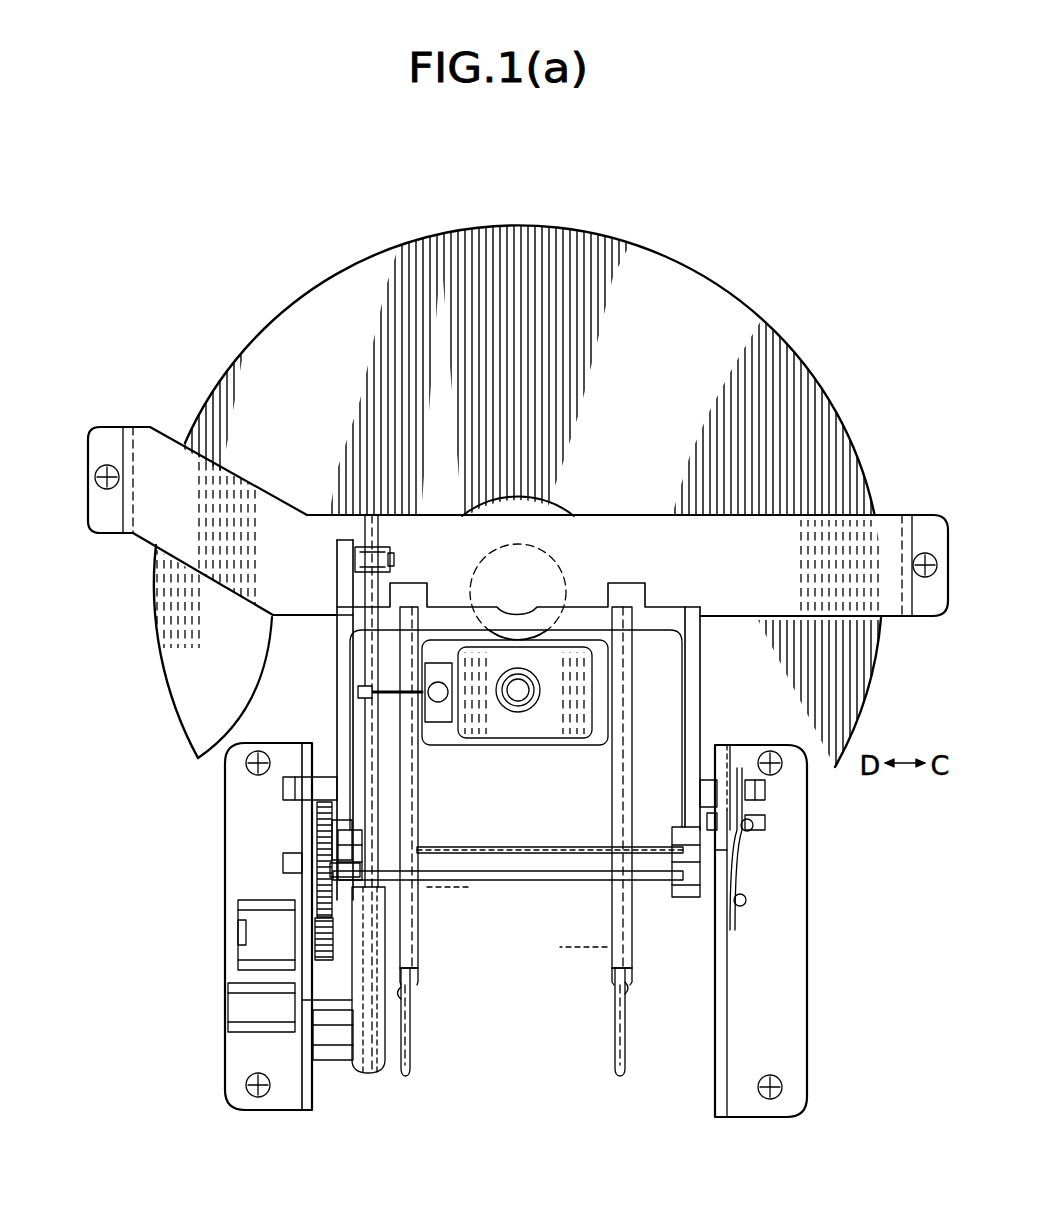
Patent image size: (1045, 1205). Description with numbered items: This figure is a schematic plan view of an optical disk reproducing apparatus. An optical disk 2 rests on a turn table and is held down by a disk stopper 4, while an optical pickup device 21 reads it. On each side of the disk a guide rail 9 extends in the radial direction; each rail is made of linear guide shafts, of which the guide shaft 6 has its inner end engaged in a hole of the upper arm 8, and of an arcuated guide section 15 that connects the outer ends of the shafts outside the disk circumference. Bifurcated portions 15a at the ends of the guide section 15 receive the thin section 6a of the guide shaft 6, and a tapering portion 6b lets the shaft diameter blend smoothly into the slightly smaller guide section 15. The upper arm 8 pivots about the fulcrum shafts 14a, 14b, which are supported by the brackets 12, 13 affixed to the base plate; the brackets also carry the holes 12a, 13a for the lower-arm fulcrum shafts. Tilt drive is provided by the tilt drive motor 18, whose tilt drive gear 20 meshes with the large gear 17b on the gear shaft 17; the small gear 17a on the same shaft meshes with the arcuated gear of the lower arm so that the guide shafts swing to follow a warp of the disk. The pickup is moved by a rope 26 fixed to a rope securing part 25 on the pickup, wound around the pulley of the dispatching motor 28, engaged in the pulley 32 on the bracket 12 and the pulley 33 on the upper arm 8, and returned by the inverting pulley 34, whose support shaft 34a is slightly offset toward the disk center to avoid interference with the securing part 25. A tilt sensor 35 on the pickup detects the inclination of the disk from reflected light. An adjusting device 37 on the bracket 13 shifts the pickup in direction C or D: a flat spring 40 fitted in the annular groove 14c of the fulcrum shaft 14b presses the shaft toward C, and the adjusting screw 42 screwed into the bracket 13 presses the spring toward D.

The optical disk 2 is at (769, 326).
The disk stopper 4 is at (522, 632).
The guide shaft 6 is at (408, 765).
The thin section 6a is at (416, 983).
The tapering portion 6b is at (418, 973).
The upper arm 8 is at (693, 697).
The guide rail 9 is at (427, 887).
The bracket 12 is at (240, 863).
The hole 12a is at (307, 740).
The bracket 13 is at (790, 990).
The hole 13a is at (725, 745).
The fulcrum shaft 14a is at (285, 790).
The fulcrum shaft 14b is at (765, 790).
The annular groove 14c is at (762, 822).
The guide section 15 is at (413, 1067).
The bifurcated portion 15a is at (413, 997).
The gear shaft 17 is at (532, 867).
The small gear 17a is at (372, 843).
The large gear 17b is at (317, 845).
The tilt drive motor 18 is at (262, 915).
The tilt drive gear 20 is at (332, 963).
The optical pickup device 21 is at (573, 668).
The rope securing part 25 is at (362, 693).
The rope 26 is at (367, 623).
The dispatching motor 28 is at (253, 1013).
The pulley 32 is at (348, 1077).
The pulley 33 is at (360, 528).
The inverting pulley 34 is at (385, 918).
The support shaft 34a is at (375, 1000).
The tilt sensor 35 is at (438, 682).
The adjusting device 37 is at (787, 883).
The flat spring 40 is at (753, 857).
The adjusting screw 42 is at (767, 837).